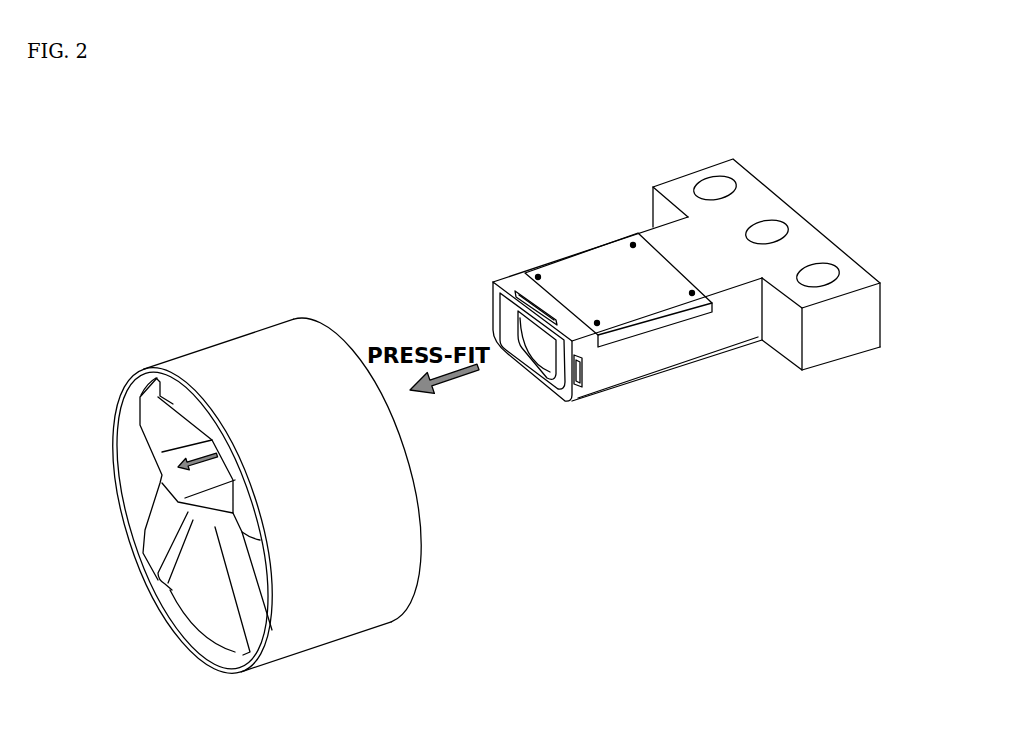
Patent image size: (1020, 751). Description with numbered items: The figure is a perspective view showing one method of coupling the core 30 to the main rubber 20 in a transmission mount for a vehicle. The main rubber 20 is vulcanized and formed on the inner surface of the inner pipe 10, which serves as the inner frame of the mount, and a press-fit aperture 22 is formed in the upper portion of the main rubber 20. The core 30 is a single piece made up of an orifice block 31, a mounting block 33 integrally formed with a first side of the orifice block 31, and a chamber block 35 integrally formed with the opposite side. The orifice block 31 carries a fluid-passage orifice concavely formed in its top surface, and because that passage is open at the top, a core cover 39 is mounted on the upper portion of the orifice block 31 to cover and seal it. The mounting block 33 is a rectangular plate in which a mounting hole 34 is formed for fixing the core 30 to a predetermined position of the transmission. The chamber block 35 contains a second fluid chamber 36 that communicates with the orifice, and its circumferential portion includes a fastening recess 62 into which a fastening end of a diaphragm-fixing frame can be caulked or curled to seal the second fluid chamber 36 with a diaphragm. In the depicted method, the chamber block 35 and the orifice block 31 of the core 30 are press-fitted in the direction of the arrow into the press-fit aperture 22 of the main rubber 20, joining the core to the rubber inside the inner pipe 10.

The inner pipe 10 is at (217, 357).
The main rubber 20 is at (154, 516).
The press-fit aperture 22 is at (170, 418).
The core 30 is at (663, 274).
The orifice block 31 is at (660, 366).
The mounting block 33 is at (852, 352).
The mounting hole 34 is at (820, 270).
The chamber block 35 is at (488, 264).
The second fluid chamber 36 is at (552, 350).
The core cover 39 is at (603, 257).
The fastening recess 62 is at (505, 300).